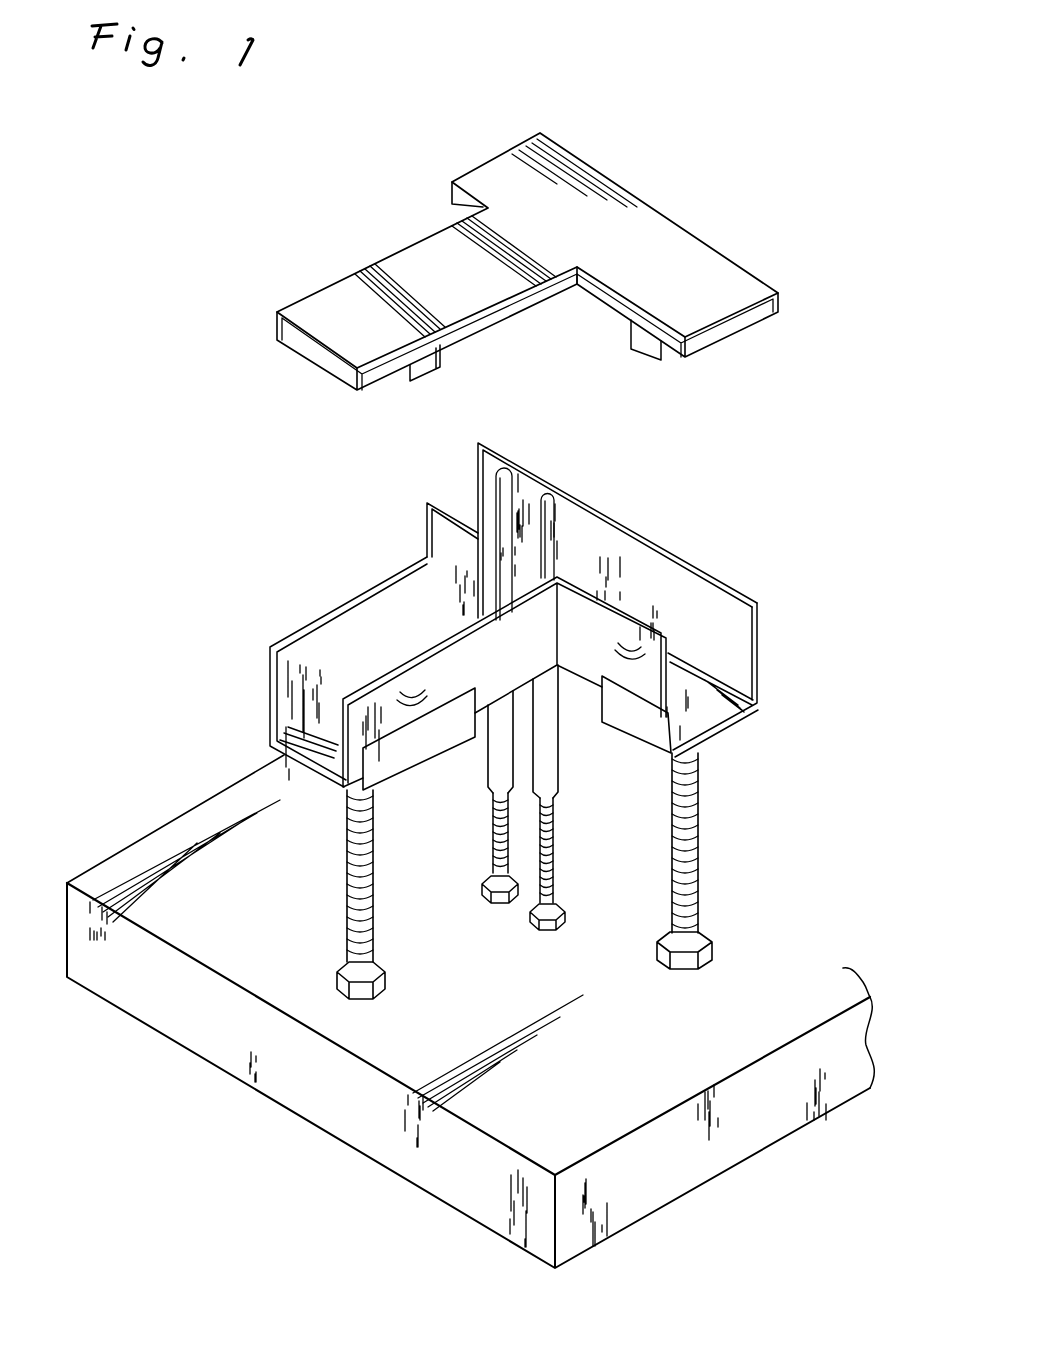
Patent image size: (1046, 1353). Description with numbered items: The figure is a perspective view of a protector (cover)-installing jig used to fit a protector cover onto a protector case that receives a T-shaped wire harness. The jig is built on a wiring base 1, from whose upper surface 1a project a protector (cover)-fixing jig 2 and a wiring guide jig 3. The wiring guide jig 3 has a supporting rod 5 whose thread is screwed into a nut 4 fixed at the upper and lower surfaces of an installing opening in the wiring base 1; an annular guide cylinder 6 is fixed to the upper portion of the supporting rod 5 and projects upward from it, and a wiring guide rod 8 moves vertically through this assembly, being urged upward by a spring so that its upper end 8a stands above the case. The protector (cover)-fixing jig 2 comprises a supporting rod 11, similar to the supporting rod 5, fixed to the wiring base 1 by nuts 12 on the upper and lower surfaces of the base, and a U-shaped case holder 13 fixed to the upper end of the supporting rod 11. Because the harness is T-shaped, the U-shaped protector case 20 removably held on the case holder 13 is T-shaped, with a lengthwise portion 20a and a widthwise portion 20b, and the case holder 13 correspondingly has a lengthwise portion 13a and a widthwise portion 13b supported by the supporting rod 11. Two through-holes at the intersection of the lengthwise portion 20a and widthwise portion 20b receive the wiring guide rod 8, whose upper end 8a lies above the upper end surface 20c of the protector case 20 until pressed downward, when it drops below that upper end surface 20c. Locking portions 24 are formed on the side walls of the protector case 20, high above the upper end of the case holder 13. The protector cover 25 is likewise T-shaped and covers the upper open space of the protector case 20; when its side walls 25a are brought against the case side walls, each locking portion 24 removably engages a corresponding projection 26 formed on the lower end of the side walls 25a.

The wiring base 1 is at (470, 1011).
The upper surface 1a is at (708, 1023).
The protector (cover)-fixing jig 2 is at (512, 911).
The wiring guide jig 3 is at (519, 862).
The nut 4 is at (500, 903).
The supporting rod 5 is at (489, 827).
The guide cylinder 6 is at (519, 828).
The wiring guide rod 8 is at (617, 485).
The upper end 8a is at (545, 497).
The supporting rod 11 is at (347, 903).
The nut 12 is at (365, 997).
The case holder 13 is at (513, 776).
The lengthwise portion 13a is at (388, 768).
The widthwise portion 13b is at (743, 717).
The protector case 20 is at (526, 568).
The lengthwise portion 20a is at (312, 666).
The widthwise portion 20b is at (758, 662).
The upper end surface 20c is at (427, 555).
The locking portion 24 is at (400, 690).
The protector cover 25 is at (530, 303).
The side wall 25a is at (467, 327).
The projection 26 is at (420, 380).